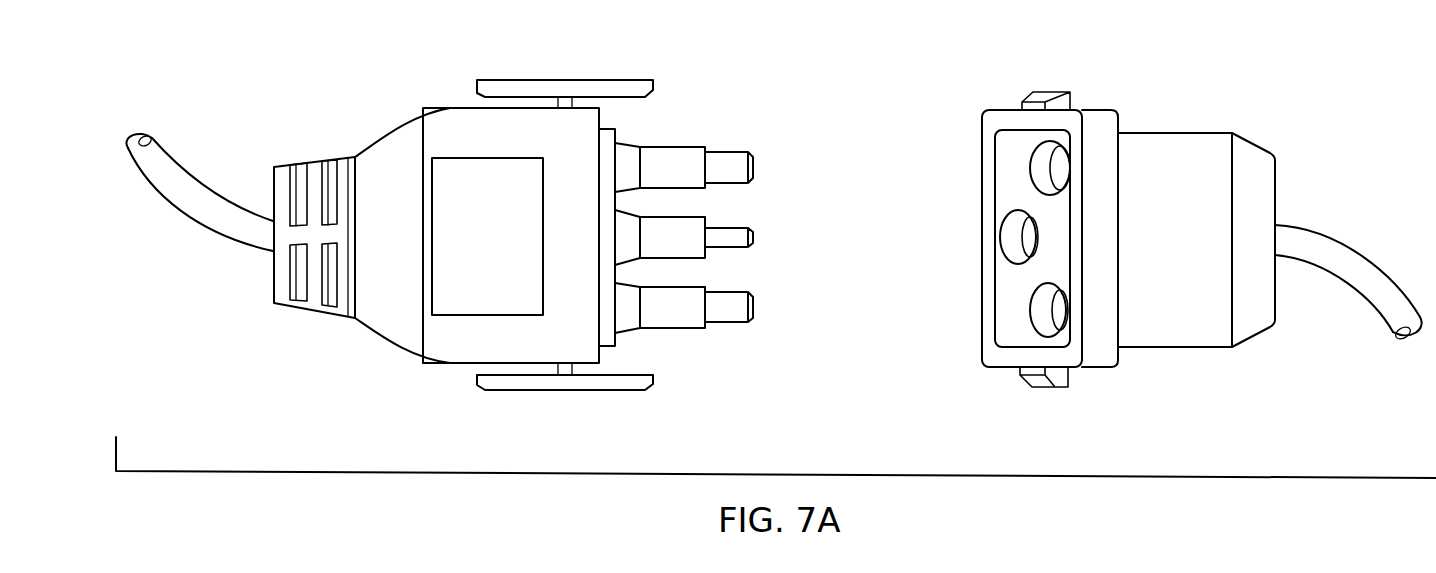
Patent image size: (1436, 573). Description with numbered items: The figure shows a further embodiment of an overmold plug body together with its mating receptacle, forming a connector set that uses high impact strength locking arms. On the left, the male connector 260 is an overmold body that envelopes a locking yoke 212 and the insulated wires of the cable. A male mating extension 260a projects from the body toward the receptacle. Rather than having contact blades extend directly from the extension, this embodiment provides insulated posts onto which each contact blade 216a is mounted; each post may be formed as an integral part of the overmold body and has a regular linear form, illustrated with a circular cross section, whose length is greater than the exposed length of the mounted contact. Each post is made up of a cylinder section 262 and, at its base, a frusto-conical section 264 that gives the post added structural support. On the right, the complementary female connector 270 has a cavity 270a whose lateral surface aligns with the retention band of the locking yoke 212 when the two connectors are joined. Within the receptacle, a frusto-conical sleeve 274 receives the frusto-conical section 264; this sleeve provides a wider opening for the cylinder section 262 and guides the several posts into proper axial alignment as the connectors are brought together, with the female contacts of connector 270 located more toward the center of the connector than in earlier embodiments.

The male connector 260 is at (360, 342).
The male mating extension 260a is at (615, 338).
The locking yoke 212 is at (518, 383).
The frusto-conical section 264 is at (627, 152).
The cylinder section 262 is at (682, 158).
The contact blade 216a is at (755, 238).
The female connector 270 is at (1224, 369).
The cavity 270a is at (1003, 277).
The frusto-conical sleeve 274 is at (1047, 158).